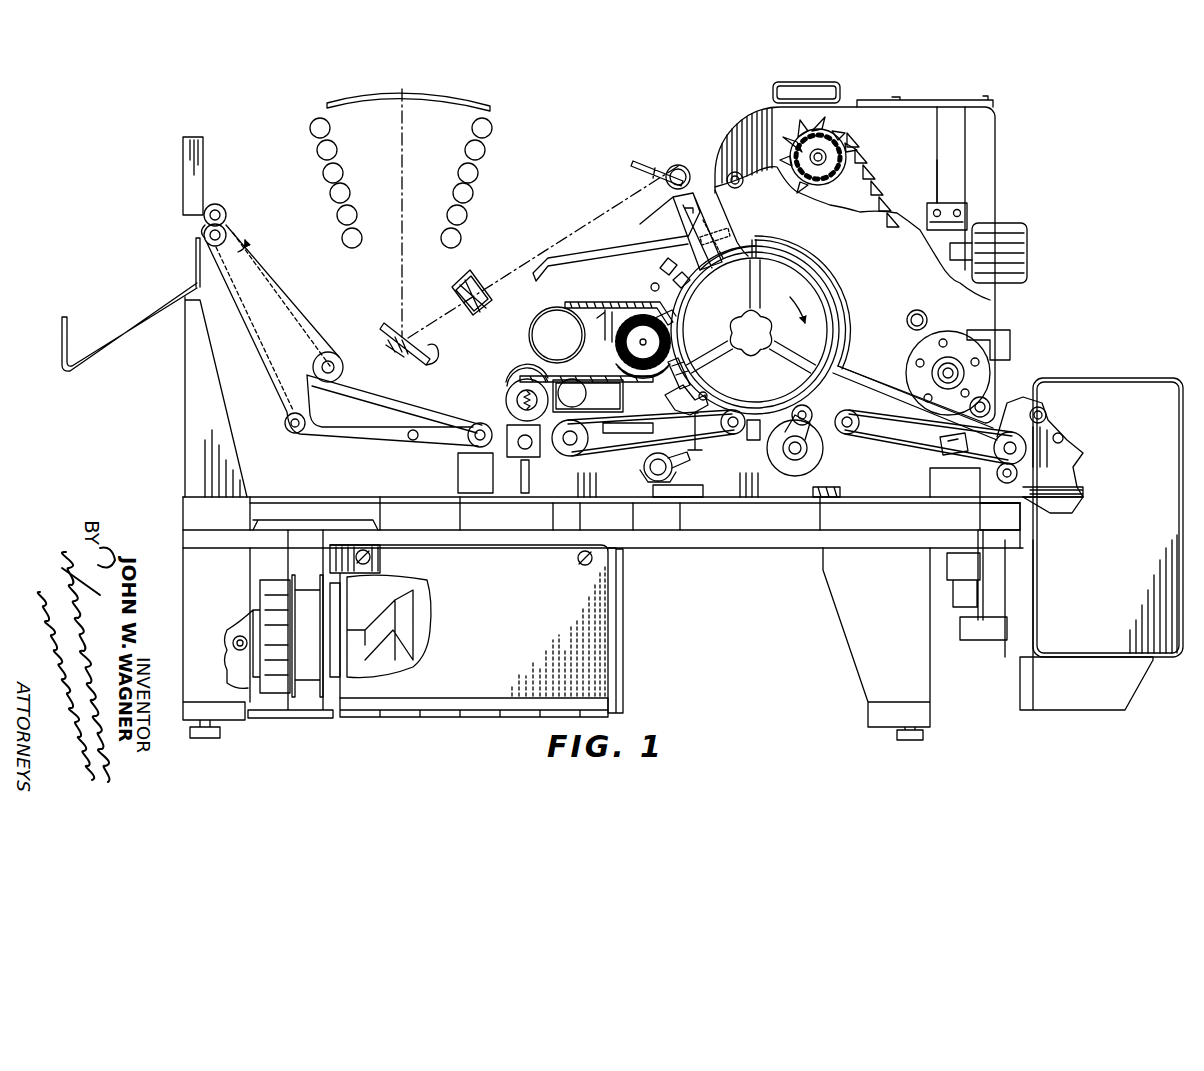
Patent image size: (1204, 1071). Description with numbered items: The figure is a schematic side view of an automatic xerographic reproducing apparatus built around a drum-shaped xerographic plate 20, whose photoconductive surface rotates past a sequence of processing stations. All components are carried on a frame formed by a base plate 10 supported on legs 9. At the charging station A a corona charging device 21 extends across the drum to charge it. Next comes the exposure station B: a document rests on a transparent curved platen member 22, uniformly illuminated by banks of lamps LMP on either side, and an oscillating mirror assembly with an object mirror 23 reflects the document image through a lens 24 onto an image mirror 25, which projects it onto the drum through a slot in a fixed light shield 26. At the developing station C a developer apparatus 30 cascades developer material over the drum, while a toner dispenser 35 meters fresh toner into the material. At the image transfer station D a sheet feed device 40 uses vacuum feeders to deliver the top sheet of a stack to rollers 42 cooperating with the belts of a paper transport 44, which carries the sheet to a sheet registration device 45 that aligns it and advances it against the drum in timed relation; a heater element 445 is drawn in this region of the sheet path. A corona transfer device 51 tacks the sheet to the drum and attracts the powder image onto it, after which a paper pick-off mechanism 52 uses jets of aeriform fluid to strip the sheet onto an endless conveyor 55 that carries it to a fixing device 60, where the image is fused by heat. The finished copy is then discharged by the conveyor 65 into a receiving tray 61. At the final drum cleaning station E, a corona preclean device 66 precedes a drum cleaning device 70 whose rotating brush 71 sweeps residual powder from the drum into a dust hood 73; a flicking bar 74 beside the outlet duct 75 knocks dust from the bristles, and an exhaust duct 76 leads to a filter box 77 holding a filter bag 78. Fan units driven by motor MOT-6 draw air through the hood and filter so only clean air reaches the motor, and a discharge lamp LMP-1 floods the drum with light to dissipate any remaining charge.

The legs 9 is at (183, 570).
The base plate 10 is at (708, 545).
The xerographic plate 20 is at (828, 316).
The corona charging device 21 is at (650, 280).
The curved platen member 22 is at (457, 93).
The object mirror 23 is at (393, 328).
The lens 24 is at (482, 300).
The image mirror 25 is at (655, 167).
The fixed light shield 26 is at (712, 265).
The developer apparatus 30 is at (1046, 160).
The toner dispenser 35 is at (937, 150).
The sheet feed device 40 is at (1141, 365).
The rollers 42 is at (1003, 487).
The paper transport 44 is at (925, 452).
The sheet registration device 45 is at (857, 480).
The heater block 445 is at (813, 491).
The corona transfer device 51 is at (755, 440).
The paper pick-off mechanism 52 is at (705, 398).
The endless conveyor 55 is at (640, 459).
The fixing device 60 is at (503, 395).
The receiving tray 61 is at (108, 350).
The conveyor 65 is at (273, 302).
The corona preclean device 66 is at (688, 378).
The drum cleaning device 70 is at (543, 306).
The rotating brush 71 is at (668, 333).
The dust hood 73 is at (667, 315).
The flicking bar 74 is at (608, 343).
The outlet duct 75 is at (620, 362).
The exhaust duct 76 is at (530, 345).
The filter box 77 is at (625, 590).
The filter bag 78 is at (400, 587).
The lamps LMP is at (490, 134).
The discharge lamp LMP-1 is at (651, 288).
The motor MOT-6 is at (233, 627).
The charging station A is at (683, 268).
The exposure station B is at (729, 246).
The developing station C is at (827, 277).
The image transfer station D is at (806, 411).
The drum cleaning station E is at (652, 391).